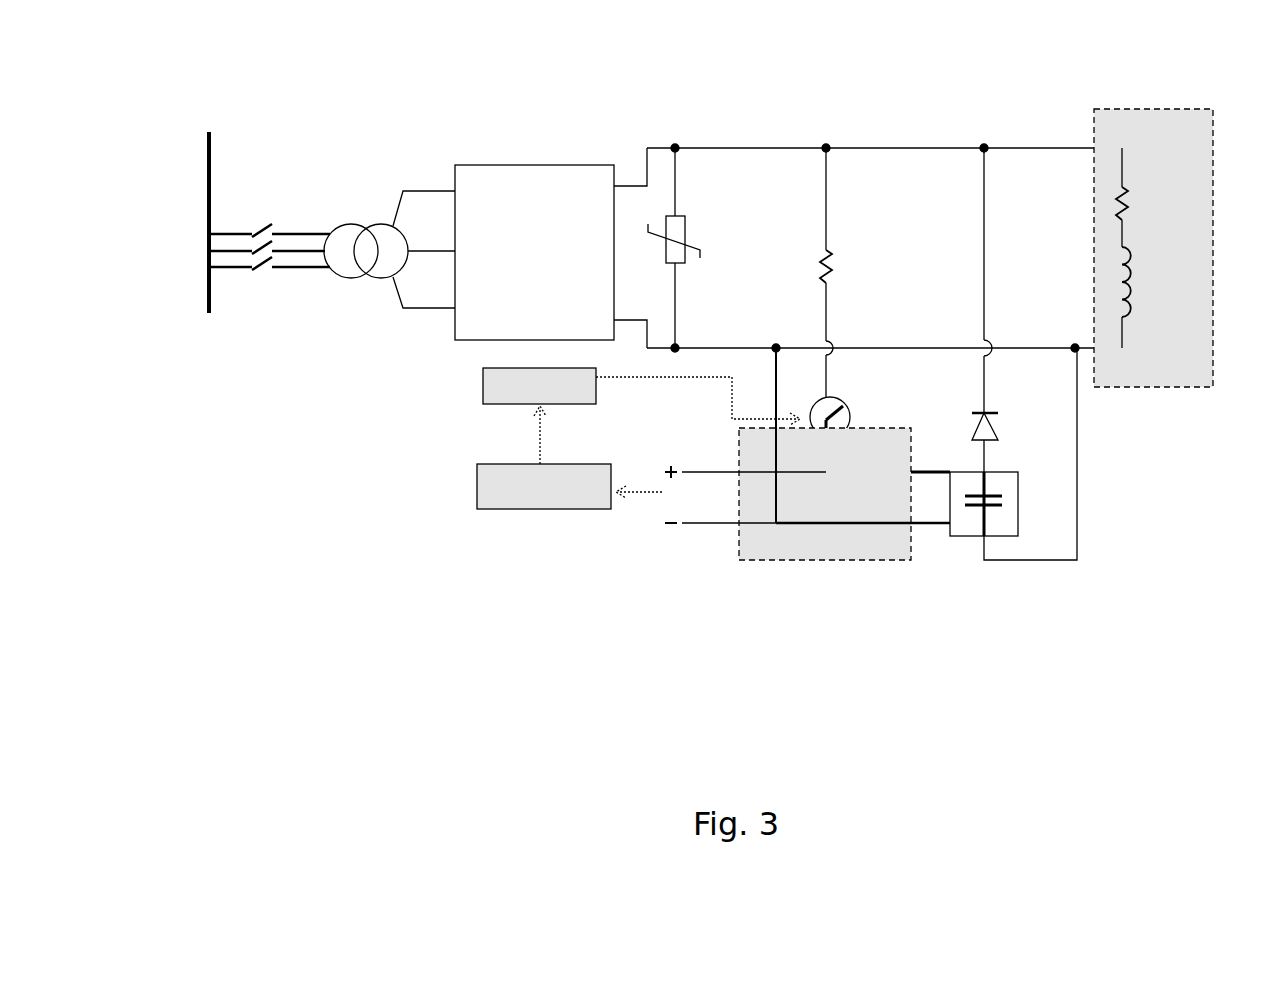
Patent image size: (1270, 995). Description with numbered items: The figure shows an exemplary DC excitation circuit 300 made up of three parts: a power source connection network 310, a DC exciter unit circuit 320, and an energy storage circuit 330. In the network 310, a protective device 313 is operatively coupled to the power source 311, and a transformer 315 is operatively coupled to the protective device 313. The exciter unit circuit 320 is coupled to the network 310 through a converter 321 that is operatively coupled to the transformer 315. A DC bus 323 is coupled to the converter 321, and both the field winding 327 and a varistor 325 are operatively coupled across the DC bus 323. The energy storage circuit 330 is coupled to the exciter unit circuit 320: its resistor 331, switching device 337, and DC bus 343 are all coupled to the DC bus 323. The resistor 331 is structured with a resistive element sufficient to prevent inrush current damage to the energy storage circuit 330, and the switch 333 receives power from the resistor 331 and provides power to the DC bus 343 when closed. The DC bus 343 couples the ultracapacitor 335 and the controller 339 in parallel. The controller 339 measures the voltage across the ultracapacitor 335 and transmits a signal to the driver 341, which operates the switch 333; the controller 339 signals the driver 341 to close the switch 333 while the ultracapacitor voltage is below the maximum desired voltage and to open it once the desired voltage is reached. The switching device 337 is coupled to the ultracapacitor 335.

The DC excitation circuit 300 is at (1107, 558).
The power source connection network 310 is at (309, 314).
The power source 311 is at (209, 140).
The protective device 313 is at (255, 228).
The transformer 315 is at (368, 226).
The DC exciter unit circuit 320 is at (505, 126).
The converter 321 is at (557, 165).
The DC bus 323 is at (723, 148).
The varistor 325 is at (685, 236).
The field winding 327 is at (1094, 109).
The energy storage circuit 330 is at (570, 568).
The resistor 331 is at (832, 270).
The switch 333 is at (845, 407).
The ultracapacitor 335 is at (1018, 472).
The switching device 337 is at (988, 413).
The controller 339 is at (500, 509).
The driver 341 is at (483, 395).
The DC bus 343 is at (706, 539).